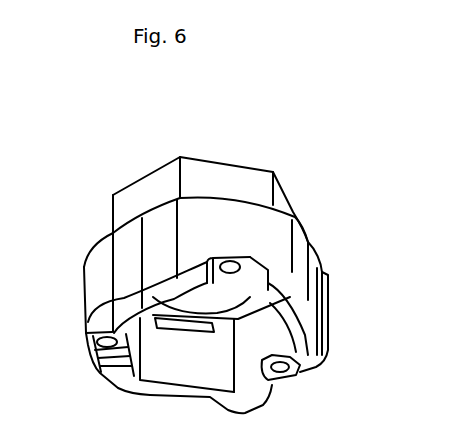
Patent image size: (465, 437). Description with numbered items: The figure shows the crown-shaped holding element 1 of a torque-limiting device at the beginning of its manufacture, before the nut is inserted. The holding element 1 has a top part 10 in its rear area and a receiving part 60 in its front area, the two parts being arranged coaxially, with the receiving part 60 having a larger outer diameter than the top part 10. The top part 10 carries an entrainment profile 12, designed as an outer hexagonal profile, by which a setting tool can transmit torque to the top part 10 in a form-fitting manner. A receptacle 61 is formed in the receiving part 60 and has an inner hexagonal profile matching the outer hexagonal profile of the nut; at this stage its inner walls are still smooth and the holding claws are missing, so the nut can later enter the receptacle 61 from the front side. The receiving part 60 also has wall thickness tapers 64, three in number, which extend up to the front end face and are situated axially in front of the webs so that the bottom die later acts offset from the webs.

The holding element 1 is at (308, 272).
The top part 10 is at (222, 155).
The entrainment profile 12 is at (208, 177).
The receiving part 60 is at (268, 243).
The receptacle 61 is at (248, 328).
The wall thickness taper 64 is at (126, 236).